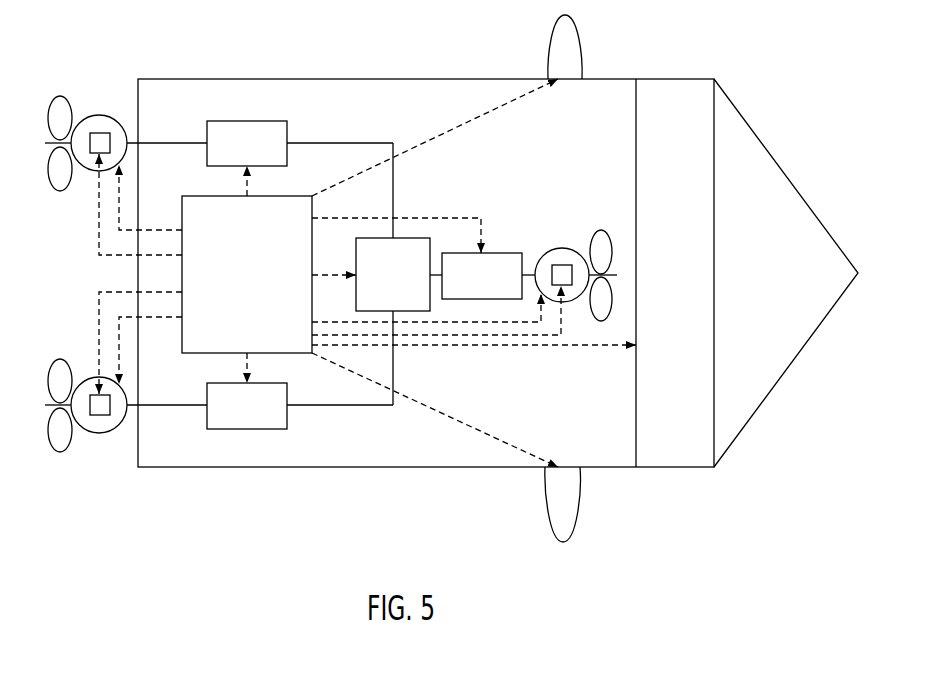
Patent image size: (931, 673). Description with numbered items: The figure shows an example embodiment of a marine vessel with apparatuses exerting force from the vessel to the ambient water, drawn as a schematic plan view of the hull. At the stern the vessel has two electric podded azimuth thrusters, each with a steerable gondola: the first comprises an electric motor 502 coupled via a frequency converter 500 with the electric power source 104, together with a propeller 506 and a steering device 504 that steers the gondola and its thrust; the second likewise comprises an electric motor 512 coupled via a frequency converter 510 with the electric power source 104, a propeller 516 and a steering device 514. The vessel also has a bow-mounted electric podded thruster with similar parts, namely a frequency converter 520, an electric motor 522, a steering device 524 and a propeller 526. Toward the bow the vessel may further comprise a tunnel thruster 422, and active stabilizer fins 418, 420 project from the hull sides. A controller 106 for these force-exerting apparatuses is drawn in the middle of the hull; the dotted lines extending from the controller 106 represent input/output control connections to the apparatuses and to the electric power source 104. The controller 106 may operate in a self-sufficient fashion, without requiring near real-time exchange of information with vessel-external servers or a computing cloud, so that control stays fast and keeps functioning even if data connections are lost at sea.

The electric power source 104 is at (408, 270).
The controller 106 is at (238, 287).
The active stabilizer fin 418 is at (582, 64).
The active stabilizer fin 420 is at (580, 490).
The tunnel thruster 422 is at (663, 273).
The frequency converter 500 is at (252, 155).
The electric motor 502 is at (117, 121).
The steering device 504 is at (99, 133).
The propeller 506 is at (62, 96).
The frequency converter 510 is at (252, 415).
The electric motor 512 is at (118, 427).
The steering device 514 is at (99, 415).
The propeller 516 is at (60, 453).
The frequency converter 520 is at (486, 290).
The electric motor 522 is at (546, 253).
The steering device 524 is at (563, 265).
The propeller 526 is at (599, 230).